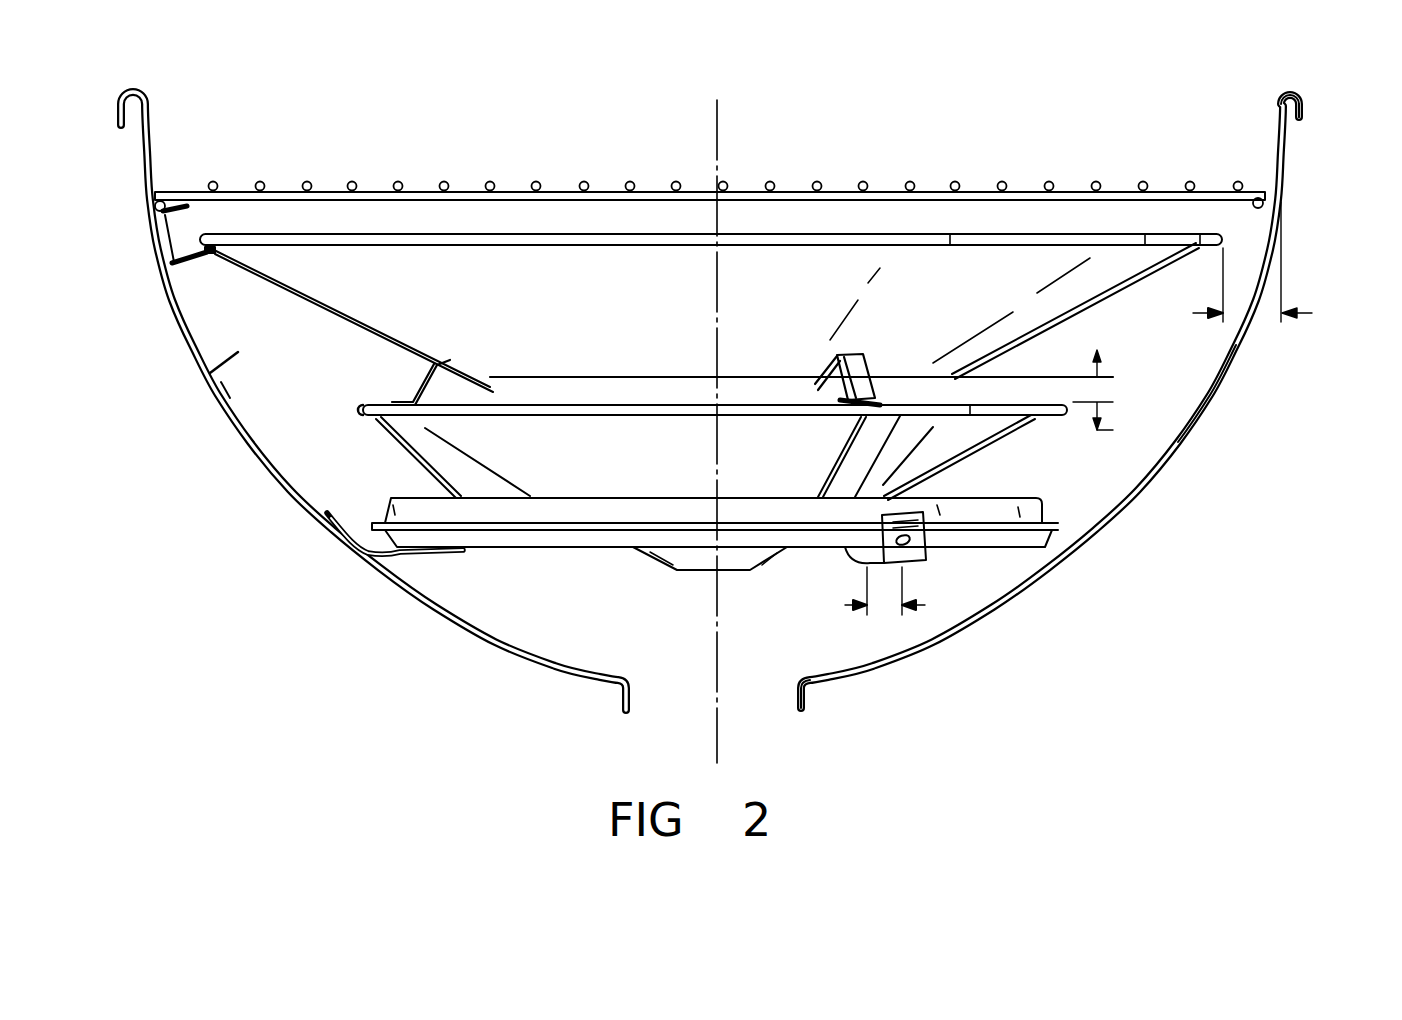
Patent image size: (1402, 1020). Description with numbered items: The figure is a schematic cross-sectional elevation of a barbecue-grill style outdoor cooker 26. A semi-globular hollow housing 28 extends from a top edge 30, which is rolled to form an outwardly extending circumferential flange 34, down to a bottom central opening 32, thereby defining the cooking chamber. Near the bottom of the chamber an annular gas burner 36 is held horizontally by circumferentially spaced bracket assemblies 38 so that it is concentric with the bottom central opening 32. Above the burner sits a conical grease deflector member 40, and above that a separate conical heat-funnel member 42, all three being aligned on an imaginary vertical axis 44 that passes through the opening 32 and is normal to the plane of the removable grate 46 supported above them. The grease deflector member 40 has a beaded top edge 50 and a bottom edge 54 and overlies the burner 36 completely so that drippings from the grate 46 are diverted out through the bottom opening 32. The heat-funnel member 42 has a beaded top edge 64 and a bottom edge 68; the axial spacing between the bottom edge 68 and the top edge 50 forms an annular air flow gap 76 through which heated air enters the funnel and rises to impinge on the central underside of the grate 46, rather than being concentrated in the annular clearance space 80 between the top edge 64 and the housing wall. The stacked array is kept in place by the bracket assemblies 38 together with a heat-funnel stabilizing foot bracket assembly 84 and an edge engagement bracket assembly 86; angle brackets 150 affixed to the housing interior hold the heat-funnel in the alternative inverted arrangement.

The outdoor cooker 26 is at (1163, 505).
The hollow housing 28 is at (1197, 418).
The top edge 30 is at (1299, 90).
The bottom central opening 32 is at (799, 702).
The circumferential flange 34 is at (1300, 112).
The annular gas burner 36 is at (558, 543).
The bracket assemblies 38 is at (401, 560).
The grease deflector member 40 is at (990, 425).
The heat-funnel member 42 is at (1070, 312).
The imaginary vertical axis 44 is at (716, 715).
The grate 46 is at (1020, 190).
The top edge of grease deflector member 50 is at (363, 410).
The bottom edge of grease deflector member 54 is at (700, 572).
The top edge of heat-funnel member 64 is at (455, 232).
The bottom edge of heat-funnel member 68 is at (618, 378).
The annular air flow gap 76 is at (1119, 400).
The annular clearance space 80 is at (1325, 270).
The heat-funnel stabilizing foot bracket assembly 84 is at (423, 378).
The heat-funnel member edge engagement bracket assembly 86 is at (207, 254).
The angle brackets 150 is at (222, 388).